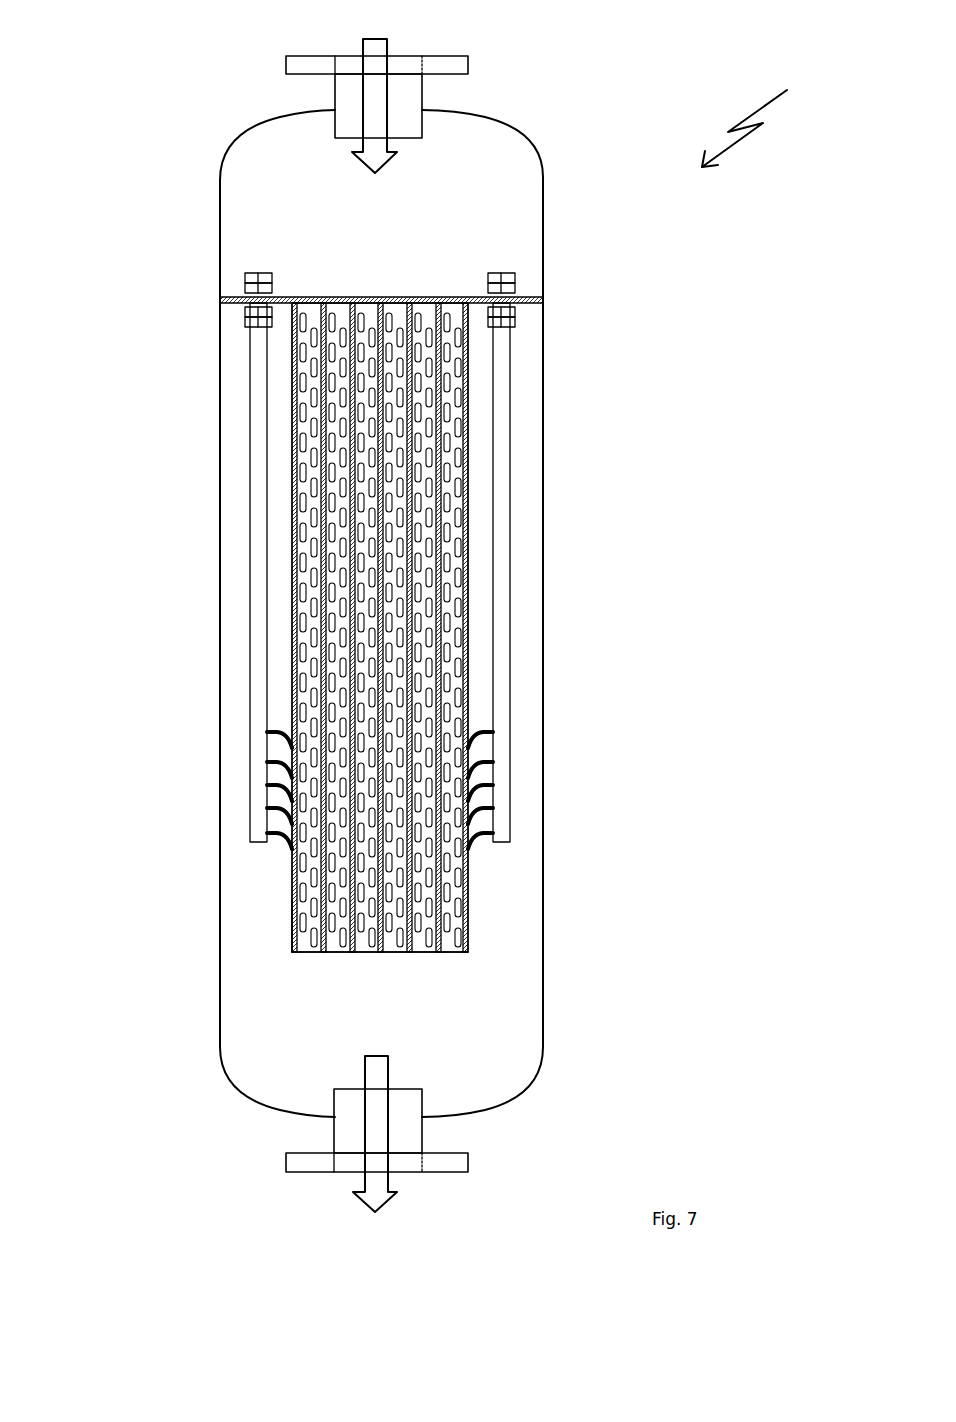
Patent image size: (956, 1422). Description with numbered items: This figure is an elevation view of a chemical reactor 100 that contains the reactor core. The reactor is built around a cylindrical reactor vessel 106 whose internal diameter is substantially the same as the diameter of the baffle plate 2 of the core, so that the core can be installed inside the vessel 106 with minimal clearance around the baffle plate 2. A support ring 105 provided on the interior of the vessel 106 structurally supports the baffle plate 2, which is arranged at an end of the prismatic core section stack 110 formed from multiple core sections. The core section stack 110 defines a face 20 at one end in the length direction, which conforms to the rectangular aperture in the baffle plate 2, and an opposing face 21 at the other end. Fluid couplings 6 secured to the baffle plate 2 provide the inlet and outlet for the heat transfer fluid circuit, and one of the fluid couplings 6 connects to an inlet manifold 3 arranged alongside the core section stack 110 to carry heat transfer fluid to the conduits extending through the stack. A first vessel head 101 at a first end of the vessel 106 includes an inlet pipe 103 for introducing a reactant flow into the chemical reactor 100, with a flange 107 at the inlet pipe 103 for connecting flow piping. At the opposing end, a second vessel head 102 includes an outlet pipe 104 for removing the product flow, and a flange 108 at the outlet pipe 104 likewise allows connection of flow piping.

The baffle plate 2 is at (525, 295).
The inlet manifold 3 is at (257, 603).
The fluid couplings 6 is at (242, 270).
The face 20 is at (400, 292).
The opposing face 21 is at (368, 957).
The chemical reactor 100 is at (763, 119).
The first vessel head 101 is at (500, 113).
The second vessel head 102 is at (233, 1087).
The inlet pipe 103 is at (340, 89).
The outlet pipe 104 is at (413, 1102).
The support ring 105 is at (543, 303).
The reactor vessel 106 is at (213, 455).
The flange 107 is at (442, 52).
The flange 108 is at (445, 1172).
The core section stack 110 is at (283, 922).